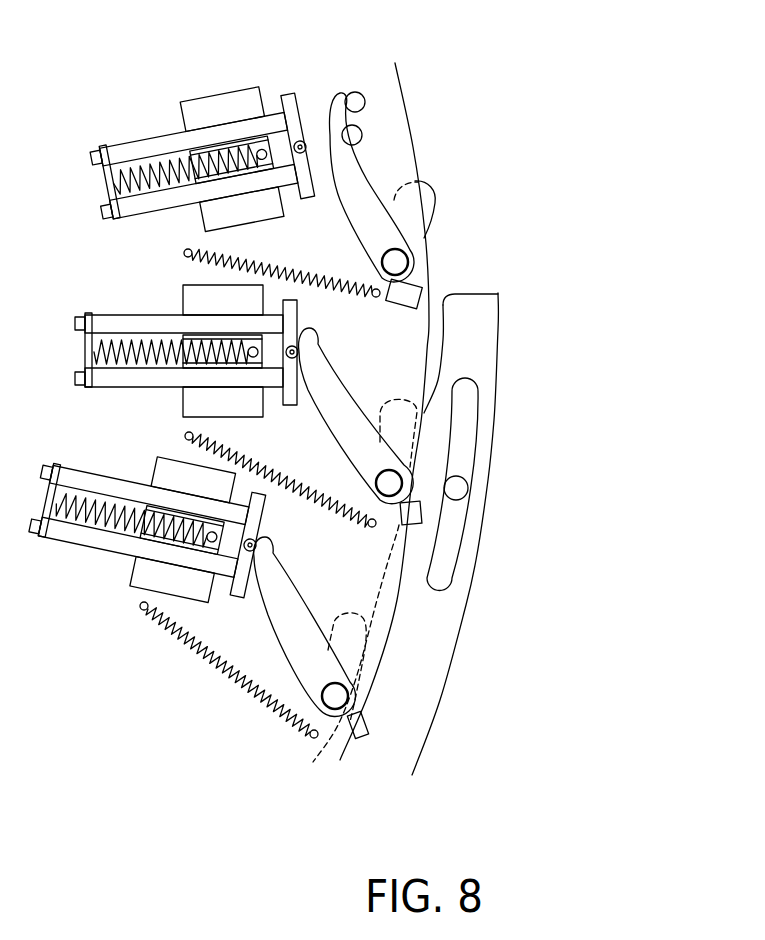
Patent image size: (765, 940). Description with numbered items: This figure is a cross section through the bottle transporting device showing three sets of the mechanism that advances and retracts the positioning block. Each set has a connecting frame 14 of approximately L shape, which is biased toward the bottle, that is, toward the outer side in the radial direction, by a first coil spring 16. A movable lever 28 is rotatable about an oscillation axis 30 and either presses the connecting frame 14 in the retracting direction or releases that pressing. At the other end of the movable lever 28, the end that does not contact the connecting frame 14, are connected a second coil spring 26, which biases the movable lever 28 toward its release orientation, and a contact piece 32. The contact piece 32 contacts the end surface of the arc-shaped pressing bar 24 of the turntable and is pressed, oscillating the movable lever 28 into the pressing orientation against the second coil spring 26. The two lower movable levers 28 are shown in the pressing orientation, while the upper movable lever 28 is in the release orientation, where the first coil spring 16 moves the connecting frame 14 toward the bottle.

The connecting frame 14 is at (262, 127).
The first coil spring 16 is at (138, 170).
The pressing bar 24 is at (427, 662).
The second coil spring 26 is at (317, 273).
The movable lever 28 is at (360, 180).
The oscillation axis 30 is at (387, 482).
The contact piece 32 is at (435, 193).